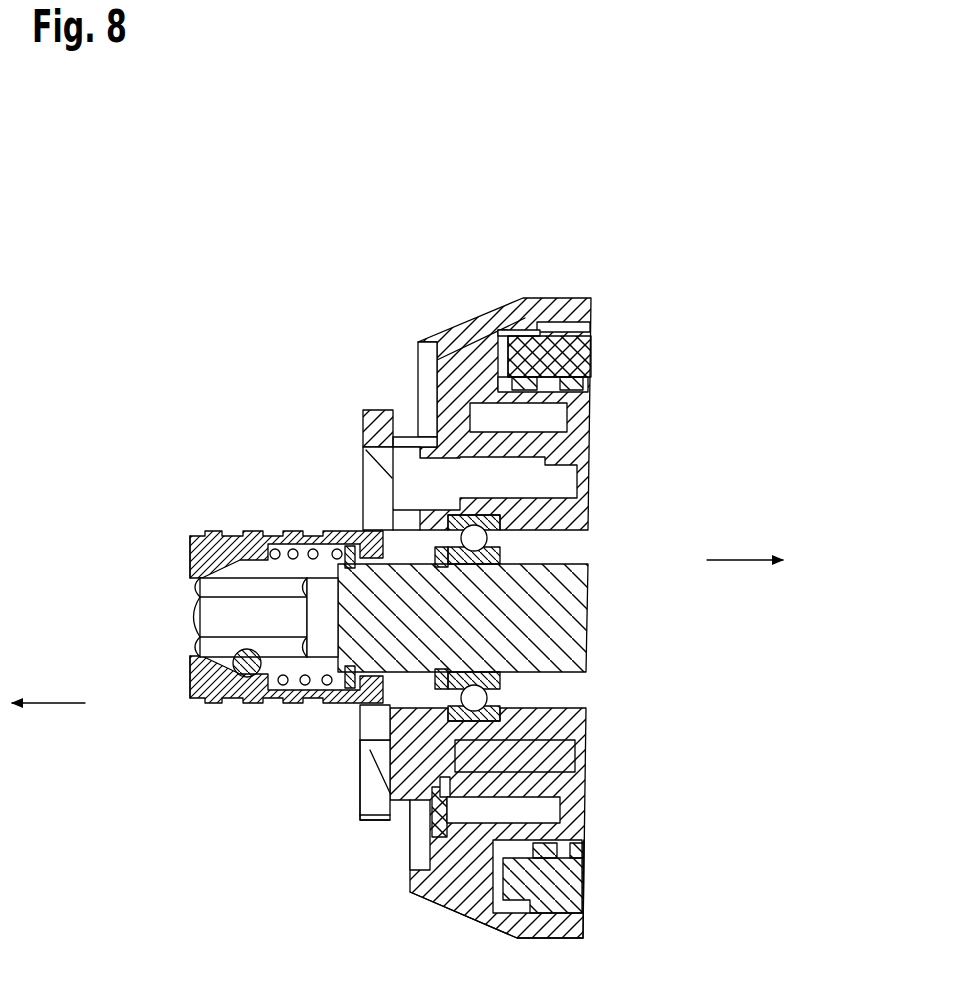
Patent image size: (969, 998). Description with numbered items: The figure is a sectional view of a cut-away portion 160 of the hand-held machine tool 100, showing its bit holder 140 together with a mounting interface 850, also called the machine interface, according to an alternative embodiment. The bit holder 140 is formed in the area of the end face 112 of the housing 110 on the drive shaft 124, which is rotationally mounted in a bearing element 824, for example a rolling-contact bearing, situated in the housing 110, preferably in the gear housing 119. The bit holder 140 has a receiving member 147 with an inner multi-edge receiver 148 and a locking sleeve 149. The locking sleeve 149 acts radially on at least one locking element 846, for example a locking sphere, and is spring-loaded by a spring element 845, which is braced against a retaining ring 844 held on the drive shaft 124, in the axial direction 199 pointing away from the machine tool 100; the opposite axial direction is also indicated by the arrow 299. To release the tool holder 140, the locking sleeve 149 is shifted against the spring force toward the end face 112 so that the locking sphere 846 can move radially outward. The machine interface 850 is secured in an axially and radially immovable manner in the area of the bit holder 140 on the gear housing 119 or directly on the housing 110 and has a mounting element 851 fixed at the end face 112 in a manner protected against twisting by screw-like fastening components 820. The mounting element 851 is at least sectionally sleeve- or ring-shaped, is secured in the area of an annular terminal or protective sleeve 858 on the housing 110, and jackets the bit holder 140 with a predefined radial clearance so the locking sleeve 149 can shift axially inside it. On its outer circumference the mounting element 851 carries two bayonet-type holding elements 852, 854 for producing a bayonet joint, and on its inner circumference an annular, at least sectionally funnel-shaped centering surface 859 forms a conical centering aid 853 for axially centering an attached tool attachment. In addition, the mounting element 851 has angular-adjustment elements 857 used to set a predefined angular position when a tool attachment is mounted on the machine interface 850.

The hand-held machine tool 100 is at (498, 566).
The housing 110 is at (498, 414).
The end face 112 is at (400, 378).
The gear housing 119 is at (577, 410).
The drive shaft 124 is at (565, 615).
The bit holder 140 is at (223, 613).
The receiving member 147 is at (210, 570).
The inner multi-edge receiver 148 is at (210, 620).
The locking sleeve 149 is at (265, 537).
The cut-away portion 160 is at (157, 249).
The axial direction 199 is at (53, 703).
The direction toward housing 299 is at (741, 560).
The fastening components 820 is at (510, 478).
The bearing element 824 is at (478, 698).
The retaining ring 844 is at (347, 535).
The spring element 845 is at (272, 702).
The locking element 846 is at (225, 650).
The mounting interface 850 is at (304, 650).
The mounting element 851 is at (437, 755).
The holding element 852 is at (377, 420).
The centering aid 853 is at (360, 770).
The holding element 854 is at (360, 815).
The angular-adjustment element 857 is at (360, 717).
The protective sleeve 858 is at (440, 895).
The centering surface 859 is at (373, 467).